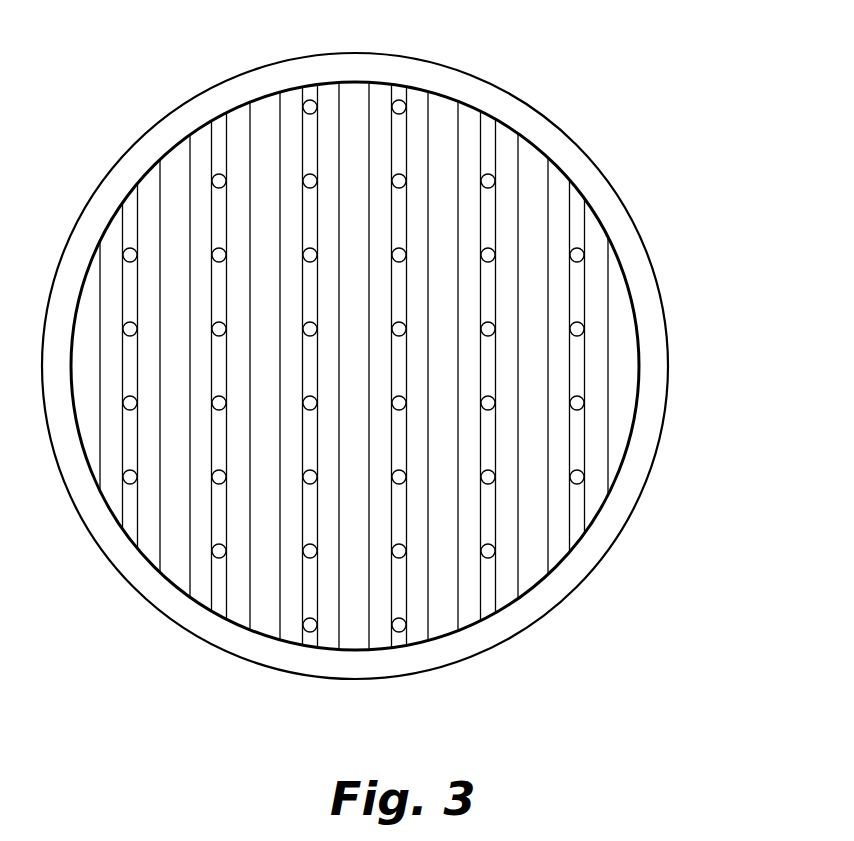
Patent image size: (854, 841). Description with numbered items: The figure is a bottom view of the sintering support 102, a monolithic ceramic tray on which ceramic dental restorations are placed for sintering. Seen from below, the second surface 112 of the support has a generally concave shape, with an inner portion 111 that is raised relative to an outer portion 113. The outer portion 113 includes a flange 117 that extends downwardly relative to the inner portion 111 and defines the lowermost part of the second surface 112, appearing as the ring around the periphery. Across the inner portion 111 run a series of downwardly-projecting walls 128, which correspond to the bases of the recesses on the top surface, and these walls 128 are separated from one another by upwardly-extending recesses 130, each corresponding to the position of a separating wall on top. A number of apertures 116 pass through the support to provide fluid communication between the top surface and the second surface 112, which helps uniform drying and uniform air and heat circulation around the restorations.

The sintering support 102 is at (389, 388).
The inner portion 111 is at (540, 148).
The second surface 112 is at (178, 550).
The outer portion 113 is at (611, 191).
The apertures 116 is at (578, 484).
The flange 117 is at (646, 291).
The downwardly-projecting walls 128 is at (222, 607).
The upwardly-extending recesses 130 is at (262, 151).